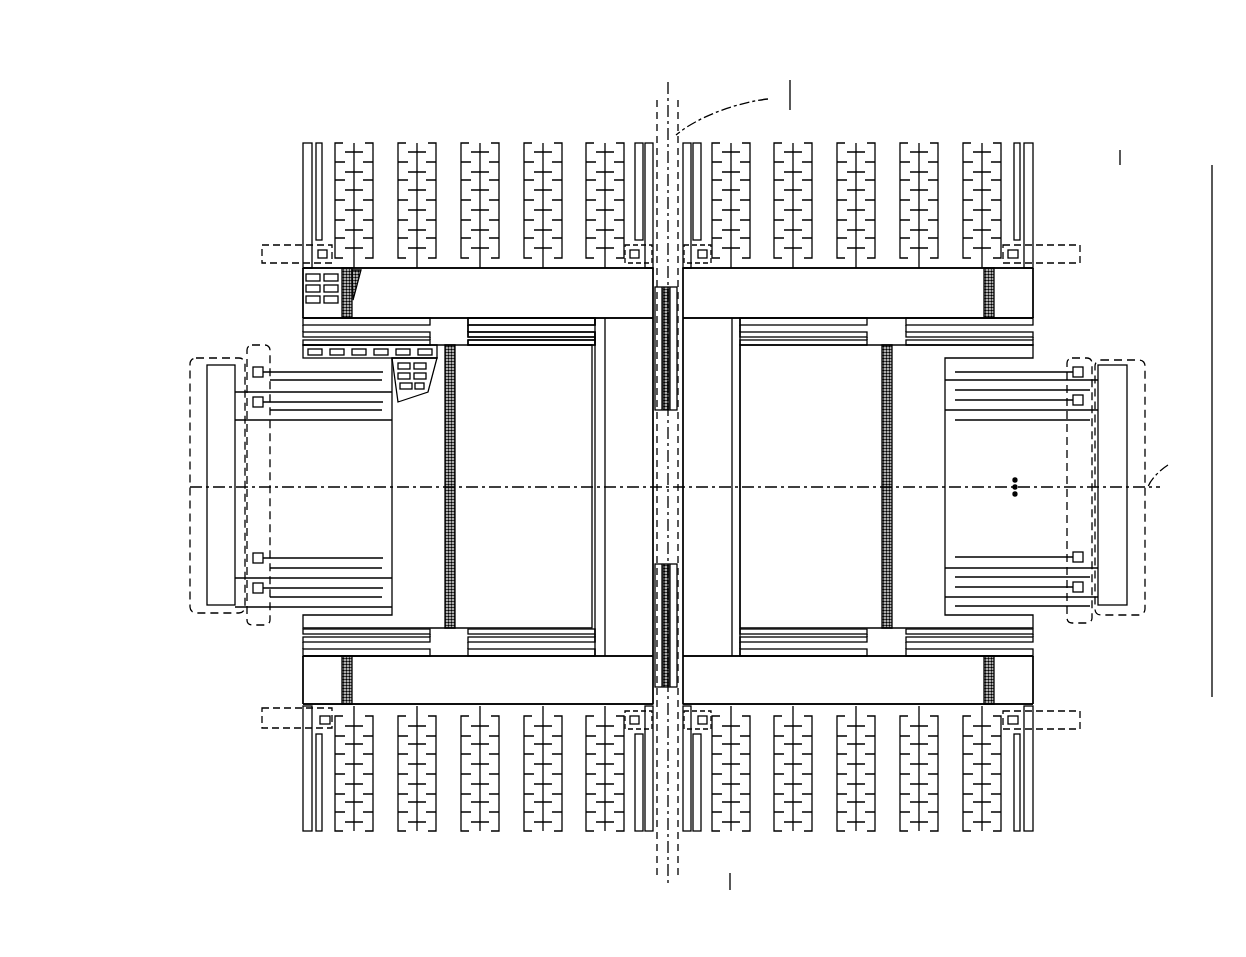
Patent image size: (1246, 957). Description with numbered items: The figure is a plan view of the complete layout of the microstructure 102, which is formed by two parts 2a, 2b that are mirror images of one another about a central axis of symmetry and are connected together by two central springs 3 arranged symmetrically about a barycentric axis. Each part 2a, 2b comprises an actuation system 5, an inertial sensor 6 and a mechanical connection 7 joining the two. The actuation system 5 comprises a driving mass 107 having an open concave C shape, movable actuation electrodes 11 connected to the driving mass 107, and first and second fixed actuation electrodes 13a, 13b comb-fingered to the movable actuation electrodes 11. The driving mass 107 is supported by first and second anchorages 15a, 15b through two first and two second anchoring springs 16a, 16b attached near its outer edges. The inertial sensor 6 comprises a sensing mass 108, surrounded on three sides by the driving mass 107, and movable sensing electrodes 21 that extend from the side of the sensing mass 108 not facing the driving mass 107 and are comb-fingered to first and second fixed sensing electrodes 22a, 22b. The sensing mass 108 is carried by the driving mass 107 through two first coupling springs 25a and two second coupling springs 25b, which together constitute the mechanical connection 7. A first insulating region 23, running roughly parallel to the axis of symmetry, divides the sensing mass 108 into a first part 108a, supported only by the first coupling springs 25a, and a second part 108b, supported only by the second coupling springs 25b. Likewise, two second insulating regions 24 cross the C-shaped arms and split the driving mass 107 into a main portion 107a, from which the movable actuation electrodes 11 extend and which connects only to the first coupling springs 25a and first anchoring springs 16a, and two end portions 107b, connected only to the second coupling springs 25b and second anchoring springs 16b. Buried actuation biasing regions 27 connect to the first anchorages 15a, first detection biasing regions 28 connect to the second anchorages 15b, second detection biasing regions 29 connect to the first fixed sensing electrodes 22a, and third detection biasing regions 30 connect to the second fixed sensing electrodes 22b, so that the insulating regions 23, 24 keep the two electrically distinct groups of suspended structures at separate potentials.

The microstructure 102 is at (1120, 237).
The first part 2a is at (238, 697).
The second part 2b is at (1118, 633).
The central spring 3 is at (680, 349).
The actuation system 5 is at (516, 845).
The inertial sensor 6 is at (668, 485).
The mechanical connection 7 is at (512, 342).
The movable actuation electrodes 11 is at (412, 133).
The first fixed actuation electrodes 13a is at (437, 180).
The second fixed actuation electrodes 13b is at (517, 194).
The first anchorages 15a is at (630, 250).
The second anchorages 15b is at (318, 253).
The first anchoring springs 16a is at (646, 142).
The second anchoring springs 16b is at (306, 240).
The movable sensing electrodes 21 is at (356, 411).
The first fixed sensing electrodes 22a is at (297, 374).
The second fixed sensing electrodes 22b is at (309, 381).
The first insulating region 23 is at (449, 472).
The second insulating regions 24 is at (353, 300).
The first coupling springs 25a is at (500, 320).
The second coupling springs 25b is at (305, 333).
The actuation biasing regions 27 is at (670, 132).
The first detection biasing regions 28 is at (262, 255).
The second detection biasing regions 29 is at (246, 355).
The third detection biasing regions 30 is at (207, 487).
The driving mass 107 is at (614, 352).
The main portion 107a is at (668, 479).
The end portions 107b is at (306, 291).
The sensing mass 108 is at (668, 485).
The first part 108a is at (668, 486).
The second part 108b is at (670, 486).